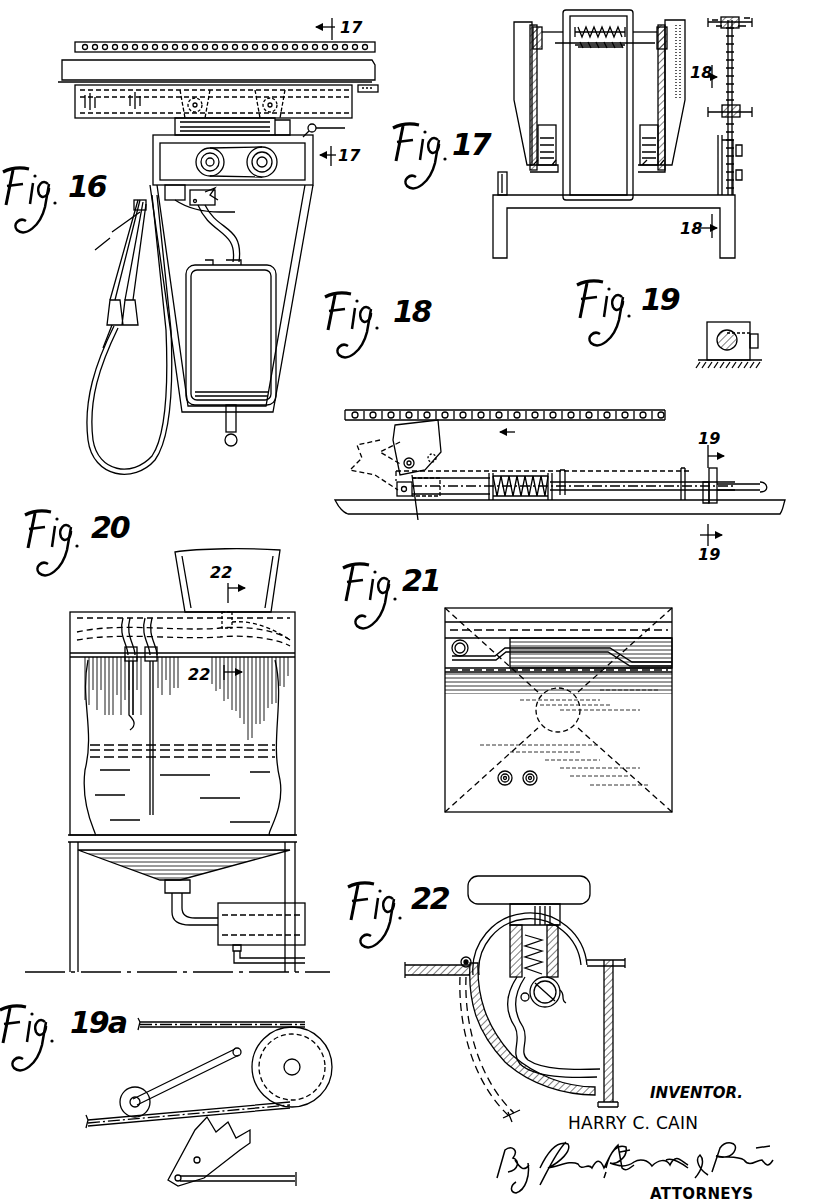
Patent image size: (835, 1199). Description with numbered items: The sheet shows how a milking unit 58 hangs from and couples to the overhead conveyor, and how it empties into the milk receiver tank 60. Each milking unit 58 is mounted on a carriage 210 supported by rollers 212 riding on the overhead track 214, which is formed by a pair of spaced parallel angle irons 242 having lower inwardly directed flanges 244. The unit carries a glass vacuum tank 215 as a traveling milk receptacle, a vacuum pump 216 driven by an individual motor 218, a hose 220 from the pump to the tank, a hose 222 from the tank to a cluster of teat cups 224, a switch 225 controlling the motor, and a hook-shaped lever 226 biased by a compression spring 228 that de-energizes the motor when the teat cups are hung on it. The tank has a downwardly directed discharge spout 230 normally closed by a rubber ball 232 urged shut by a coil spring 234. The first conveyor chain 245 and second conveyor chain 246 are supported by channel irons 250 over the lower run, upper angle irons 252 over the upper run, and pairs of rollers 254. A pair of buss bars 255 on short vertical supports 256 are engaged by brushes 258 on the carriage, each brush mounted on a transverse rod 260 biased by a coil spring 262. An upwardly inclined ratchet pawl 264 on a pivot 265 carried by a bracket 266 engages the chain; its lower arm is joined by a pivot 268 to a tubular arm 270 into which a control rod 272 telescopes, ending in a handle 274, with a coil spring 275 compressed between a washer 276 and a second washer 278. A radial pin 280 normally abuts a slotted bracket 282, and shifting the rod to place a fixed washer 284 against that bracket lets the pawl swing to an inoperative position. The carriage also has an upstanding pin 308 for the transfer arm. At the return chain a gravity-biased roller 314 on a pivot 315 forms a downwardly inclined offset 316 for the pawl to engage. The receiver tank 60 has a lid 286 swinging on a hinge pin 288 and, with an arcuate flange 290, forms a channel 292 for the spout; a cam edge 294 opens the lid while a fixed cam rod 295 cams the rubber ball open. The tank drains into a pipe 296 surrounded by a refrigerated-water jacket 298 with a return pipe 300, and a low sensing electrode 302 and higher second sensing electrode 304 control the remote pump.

In FIG. 16, the milking unit 58 is at (306, 266).
In FIG. 20, the milk receiver tank 60 is at (297, 748).
In FIG. 21, the milk receiver tank 60 is at (443, 777).
In FIG. 16, the carriage 210 is at (312, 186).
In FIG. 17, the carriage 210 is at (508, 247).
In FIG. 18, the carriage 210 is at (358, 500).
In FIG. 16, the rollers 212 is at (290, 73).
In FIG. 17, the rollers 212 is at (640, 127).
In FIG. 16, the overhead track 214 is at (88, 104).
In FIG. 17, the overhead track 214 is at (530, 156).
In FIG. 16, the glass vacuum tank 215 is at (262, 320).
In FIG. 20, the glass vacuum tank 215 is at (254, 562).
In FIG. 16, the vacuum pump 216 is at (200, 150).
In FIG. 16, the motor 218 is at (278, 163).
In FIG. 16, the hose 220 is at (224, 240).
In FIG. 16, the hose 222 is at (164, 395).
In FIG. 16, the cluster of teat cups 224 is at (112, 330).
In FIG. 16, the switch 225 is at (175, 185).
In FIG. 16, the hook-shaped lever 226 is at (134, 206).
In FIG. 16, the compression spring 228 is at (212, 190).
In FIG. 16, the discharge spout 230 is at (226, 427).
In FIG. 20, the discharge spout 230 is at (266, 620).
In FIG. 22, the discharge spout 230 is at (512, 927).
In FIG. 16, the rubber ball 232 is at (238, 441).
In FIG. 20, the rubber ball 232 is at (290, 649).
In FIG. 22, the rubber ball 232 is at (561, 996).
In FIG. 21, the coil spring 234 is at (452, 648).
In FIG. 22, the coil spring 234 is at (557, 933).
In FIG. 17, the angle irons 242 is at (534, 102).
In FIG. 17, the flanges 244 is at (546, 172).
In FIG. 16, the first conveyor chain 245 is at (110, 47).
In FIG. 17, the first conveyor chain 245 is at (745, 19).
In FIG. 18, the first conveyor chain 245 is at (528, 410).
In FIG. 19A, the second conveyor chain 246 is at (224, 1022).
In FIG. 17, the channel irons 250 is at (745, 115).
In FIG. 17, the upper angle irons 252 is at (745, 27).
In FIG. 17, the rollers 254 is at (736, 30).
In FIG. 17, the buss bars 255 is at (533, 30).
In FIG. 17, the vertical supports 256 is at (518, 79).
In FIG. 17, the brushes 258 is at (537, 44).
In FIG. 17, the transverse rod 260 is at (563, 32).
In FIG. 17, the coil spring 262 is at (588, 45).
In FIG. 18, the ratchet pawl 264 is at (428, 432).
In FIG. 19A, the ratchet pawl 264 is at (241, 1146).
In FIG. 18, the pivot 265 is at (420, 472).
In FIG. 18, the bracket 266 is at (396, 497).
In FIG. 18, the pivot 268 is at (413, 493).
In FIG. 18, the tubular arm 270 is at (470, 484).
In FIG. 19, the control rod 272 is at (728, 329).
In FIG. 18, the control rod 272 is at (582, 478).
In FIG. 16, the handle 274 is at (340, 130).
In FIG. 18, the handle 274 is at (742, 484).
In FIG. 18, the coil spring 275 is at (517, 497).
In FIG. 18, the washer 276 is at (491, 500).
In FIG. 18, the second washer 278 is at (552, 500).
In FIG. 19, the radial pin 280 is at (757, 334).
In FIG. 18, the radial pin 280 is at (720, 475).
In FIG. 19, the slotted bracket 282 is at (707, 340).
In FIG. 18, the slotted bracket 282 is at (718, 504).
In FIG. 18, the fixed washer 284 is at (686, 470).
In FIG. 21, the lid 286 is at (472, 672).
In FIG. 22, the lid 286 is at (497, 942).
In FIG. 22, the hinge pin 288 is at (463, 960).
In FIG. 21, the arcuate flange 290 is at (537, 628).
In FIG. 22, the arcuate flange 290 is at (590, 945).
In FIG. 21, the channel 292 is at (482, 640).
In FIG. 21, the cam edge 294 is at (452, 658).
In FIG. 20, the cam rod 295 is at (176, 632).
In FIG. 21, the cam rod 295 is at (518, 650).
In FIG. 22, the cam rod 295 is at (538, 1012).
In FIG. 20, the pipe 296 is at (180, 920).
In FIG. 20, the jacket 298 is at (305, 905).
In FIG. 20, the return pipe 300 is at (305, 966).
In FIG. 20, the sensing electrode 302 is at (155, 738).
In FIG. 20, the second sensing electrode 304 is at (130, 727).
In FIG. 17, the upstanding pin 308 is at (497, 186).
In FIG. 19A, the gravity-biased roller 314 is at (140, 1091).
In FIG. 19A, the pivot 315 is at (238, 1049).
In FIG. 19A, the downwardly inclined offset 316 is at (263, 1114).